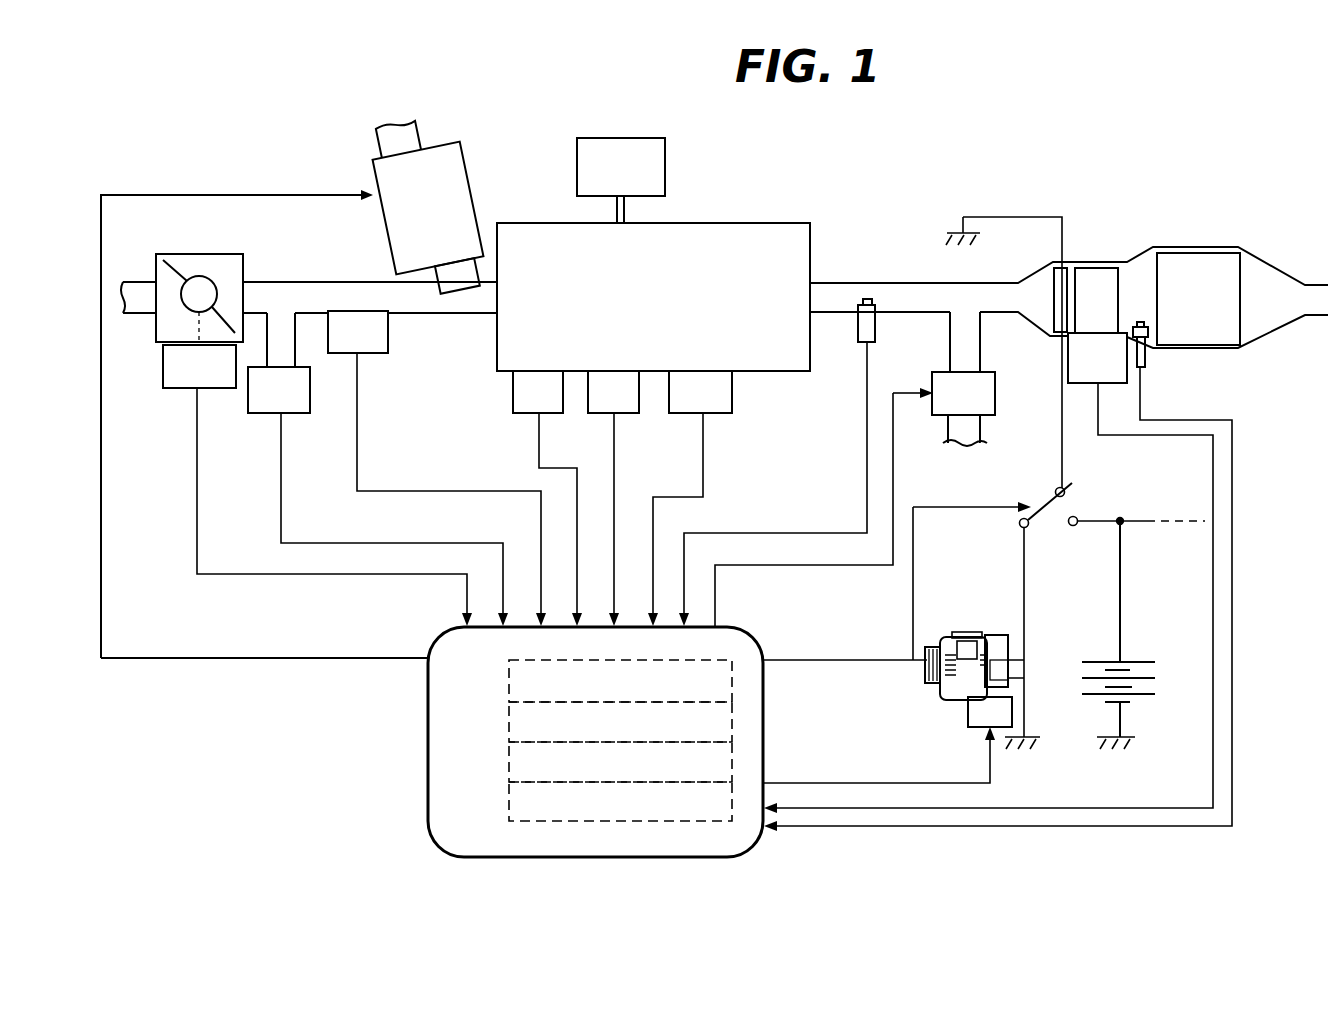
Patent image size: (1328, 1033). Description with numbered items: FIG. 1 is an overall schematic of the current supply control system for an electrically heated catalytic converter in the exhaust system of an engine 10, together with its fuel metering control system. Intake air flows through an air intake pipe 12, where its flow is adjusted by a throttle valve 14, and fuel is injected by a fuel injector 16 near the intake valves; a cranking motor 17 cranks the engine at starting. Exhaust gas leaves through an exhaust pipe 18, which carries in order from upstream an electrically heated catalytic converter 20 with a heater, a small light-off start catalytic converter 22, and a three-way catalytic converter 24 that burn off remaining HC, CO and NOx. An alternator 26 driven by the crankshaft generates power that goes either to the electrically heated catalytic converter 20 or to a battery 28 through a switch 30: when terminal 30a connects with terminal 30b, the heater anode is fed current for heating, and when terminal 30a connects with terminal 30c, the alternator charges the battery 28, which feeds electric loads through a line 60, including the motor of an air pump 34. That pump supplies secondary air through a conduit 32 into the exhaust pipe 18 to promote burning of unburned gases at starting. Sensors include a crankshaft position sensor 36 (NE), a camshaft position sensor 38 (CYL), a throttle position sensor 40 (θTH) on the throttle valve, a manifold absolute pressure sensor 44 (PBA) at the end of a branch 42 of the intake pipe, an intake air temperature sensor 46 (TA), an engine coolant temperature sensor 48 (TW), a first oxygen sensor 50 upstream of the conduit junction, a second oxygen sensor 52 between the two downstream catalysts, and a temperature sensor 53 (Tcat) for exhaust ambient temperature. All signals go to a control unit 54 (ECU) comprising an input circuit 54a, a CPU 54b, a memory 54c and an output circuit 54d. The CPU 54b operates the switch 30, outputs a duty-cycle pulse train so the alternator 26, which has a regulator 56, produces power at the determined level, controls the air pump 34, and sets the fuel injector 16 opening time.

The engine 10 is at (767, 223).
The air intake pipe 12 is at (323, 282).
The throttle valve 14 is at (178, 254).
The fuel injector 16 is at (475, 195).
The cranking motor 17 is at (665, 152).
The exhaust pipe 18 is at (893, 283).
The electrically heated catalytic converter 20 is at (1077, 265).
The start catalytic converter 22 is at (1107, 277).
The three-way catalytic converter 24 is at (1225, 268).
The alternator 26 is at (944, 633).
The battery 28 is at (1150, 670).
The switch 30 is at (1037, 502).
The terminal 30a is at (1018, 523).
The terminal 30b is at (1065, 488).
The terminal 30c is at (1073, 526).
The conduit 32 is at (980, 358).
The air pump 34 is at (940, 417).
The crankshaft position sensor 36 is at (630, 413).
The camshaft position sensor 38 is at (723, 413).
The throttle position sensor 40 is at (218, 390).
The branch 42 is at (290, 335).
The manifold absolute pressure sensor 44 is at (303, 420).
The intake air temperature sensor 46 is at (388, 343).
The engine coolant temperature sensor 48 is at (552, 413).
The first oxygen sensor 50 is at (858, 330).
The second oxygen sensor 52 is at (1148, 360).
The temperature sensor 53 is at (1077, 383).
The control unit 54 is at (428, 797).
The input circuit 54a is at (732, 662).
The CPU 54b is at (732, 724).
The memory 54c is at (732, 768).
The output circuit 54d is at (732, 812).
The regulator 56 is at (966, 718).
The line 60 is at (1147, 523).